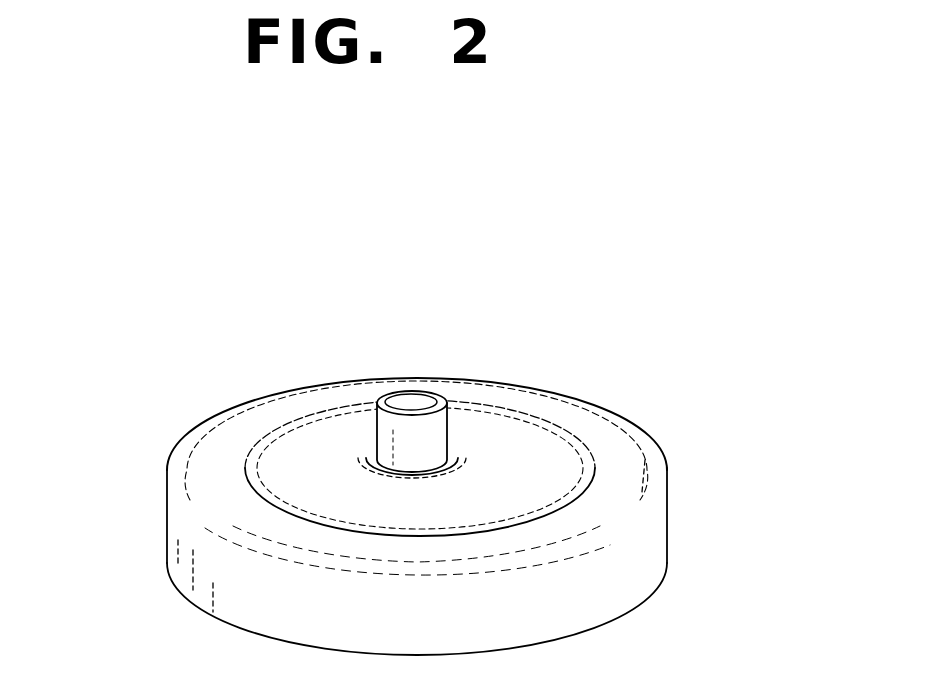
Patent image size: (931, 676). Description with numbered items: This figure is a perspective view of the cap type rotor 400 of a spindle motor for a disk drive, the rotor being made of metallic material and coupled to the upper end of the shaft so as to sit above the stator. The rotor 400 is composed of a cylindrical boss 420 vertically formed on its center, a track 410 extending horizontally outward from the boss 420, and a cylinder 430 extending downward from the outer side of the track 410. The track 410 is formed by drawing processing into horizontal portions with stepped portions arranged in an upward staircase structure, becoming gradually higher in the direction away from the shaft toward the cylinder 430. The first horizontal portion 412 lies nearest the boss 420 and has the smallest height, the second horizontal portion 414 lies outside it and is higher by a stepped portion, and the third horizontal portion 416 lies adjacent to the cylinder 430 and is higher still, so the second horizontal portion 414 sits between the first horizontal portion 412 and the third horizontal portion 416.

The cap type rotor 400 is at (680, 223).
The track 410 is at (50, 288).
The first horizontal portion 412 is at (370, 460).
The second horizontal portion 414 is at (287, 467).
The third horizontal portion 416 is at (207, 484).
The cylindrical boss 420 is at (438, 430).
The cylinder 430 is at (655, 555).